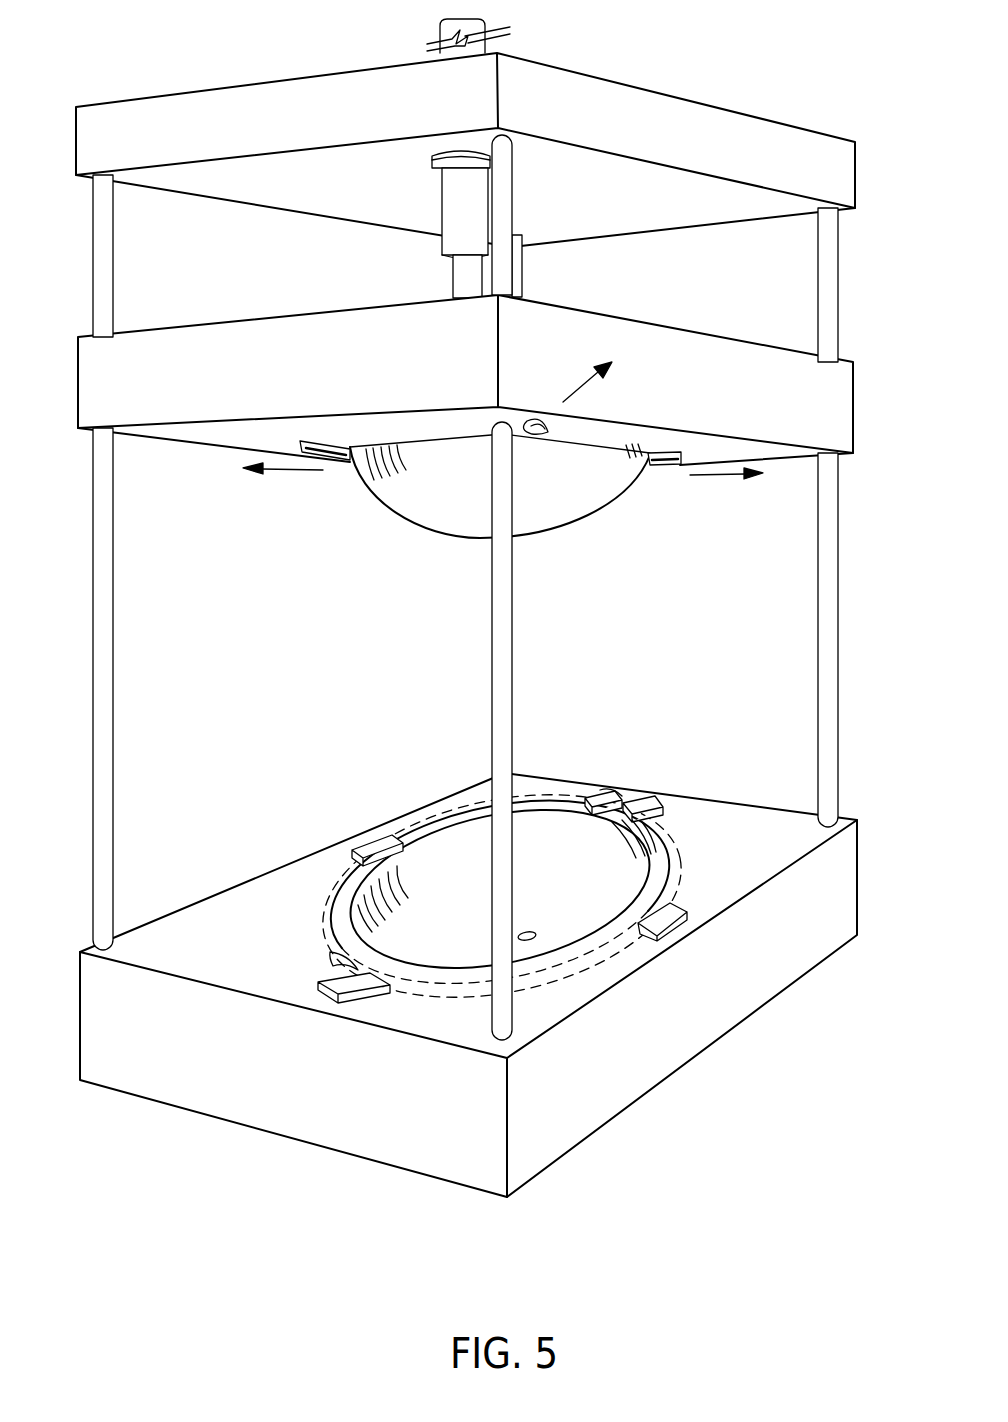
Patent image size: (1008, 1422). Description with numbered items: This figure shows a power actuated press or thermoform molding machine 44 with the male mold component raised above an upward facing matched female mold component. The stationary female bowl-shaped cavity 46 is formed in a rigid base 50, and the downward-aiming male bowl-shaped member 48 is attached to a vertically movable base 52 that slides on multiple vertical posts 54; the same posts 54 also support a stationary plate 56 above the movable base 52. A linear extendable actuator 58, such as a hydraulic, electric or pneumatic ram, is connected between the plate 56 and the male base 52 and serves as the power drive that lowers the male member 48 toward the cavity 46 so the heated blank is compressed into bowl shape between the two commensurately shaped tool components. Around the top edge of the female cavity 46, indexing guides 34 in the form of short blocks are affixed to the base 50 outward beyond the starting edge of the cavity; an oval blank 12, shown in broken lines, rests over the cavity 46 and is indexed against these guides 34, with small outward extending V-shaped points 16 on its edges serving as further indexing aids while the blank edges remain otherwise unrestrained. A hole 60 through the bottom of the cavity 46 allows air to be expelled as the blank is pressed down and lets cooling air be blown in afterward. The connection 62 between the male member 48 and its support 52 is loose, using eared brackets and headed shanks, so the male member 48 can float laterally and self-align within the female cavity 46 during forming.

The blank 12 is at (678, 842).
The V-shaped point 16 is at (618, 790).
The indexing guides 34 is at (647, 795).
The molding machine 44 is at (694, 93).
The female bowl-shaped cavity 46 is at (458, 853).
The male bowl-shaped member 48 is at (590, 500).
The rigid base 50 is at (257, 893).
The vertically movable base 52 is at (711, 347).
The vertical posts 54 is at (103, 632).
The stationary plate 56 is at (217, 183).
The linear extendable actuator 58 is at (460, 233).
The hole 60 is at (532, 939).
The self-adjusting connection 62 is at (547, 430).